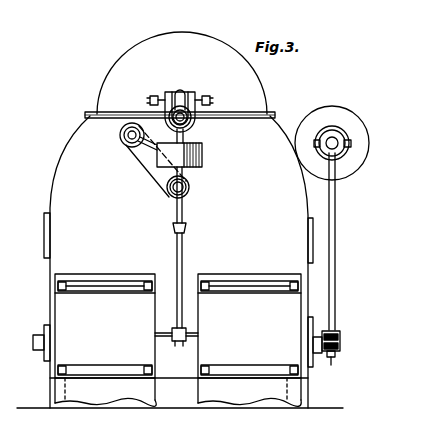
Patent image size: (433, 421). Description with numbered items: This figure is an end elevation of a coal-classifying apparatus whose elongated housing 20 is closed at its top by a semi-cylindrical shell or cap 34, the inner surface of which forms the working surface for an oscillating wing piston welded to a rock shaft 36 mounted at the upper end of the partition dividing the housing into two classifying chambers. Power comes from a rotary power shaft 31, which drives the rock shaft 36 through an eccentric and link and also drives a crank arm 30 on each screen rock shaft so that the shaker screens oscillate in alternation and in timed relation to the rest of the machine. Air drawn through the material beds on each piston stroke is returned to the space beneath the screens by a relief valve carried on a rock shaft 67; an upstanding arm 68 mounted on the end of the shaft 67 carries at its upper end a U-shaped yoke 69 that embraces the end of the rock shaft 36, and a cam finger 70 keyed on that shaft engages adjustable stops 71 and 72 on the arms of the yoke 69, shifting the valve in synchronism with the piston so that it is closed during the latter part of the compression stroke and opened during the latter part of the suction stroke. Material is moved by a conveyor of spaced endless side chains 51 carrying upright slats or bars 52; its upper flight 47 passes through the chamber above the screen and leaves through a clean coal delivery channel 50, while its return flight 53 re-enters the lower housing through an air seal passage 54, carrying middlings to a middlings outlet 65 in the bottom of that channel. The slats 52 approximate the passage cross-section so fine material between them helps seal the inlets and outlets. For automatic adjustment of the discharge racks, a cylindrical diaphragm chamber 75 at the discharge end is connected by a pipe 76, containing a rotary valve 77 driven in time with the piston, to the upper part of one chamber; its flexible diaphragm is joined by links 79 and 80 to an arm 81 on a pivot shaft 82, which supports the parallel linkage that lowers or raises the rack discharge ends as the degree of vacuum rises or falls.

The housing 20 is at (73, 140).
The crank arm 30 is at (340, 343).
The rotary power shaft 31 is at (322, 138).
The semi-cylindrical shell or cap 34 is at (100, 93).
The rock shaft 36 is at (191, 120).
The upper flight 47 is at (131, 283).
The clean coal delivery channel 50 is at (100, 282).
The side chains 51 is at (56, 287).
The slats or bars 52 is at (104, 290).
The return flight 53 is at (104, 376).
The air seal passage 54 is at (105, 365).
The middlings outlet 65 is at (203, 392).
The rock shaft 67 is at (190, 187).
The upstanding arm 68 is at (203, 152).
The U-shaped yoke 69 is at (152, 110).
The cam finger 70 is at (184, 93).
The adjustable stop 71 is at (156, 95).
The adjustable stop 72 is at (210, 99).
The diaphragm chamber 75 is at (200, 163).
The pipe 76 is at (121, 134).
The rotary valve 77 is at (127, 136).
The link 79 is at (184, 214).
The link 80 is at (184, 251).
The arm 81 is at (177, 342).
The pivot shaft 82 is at (192, 335).